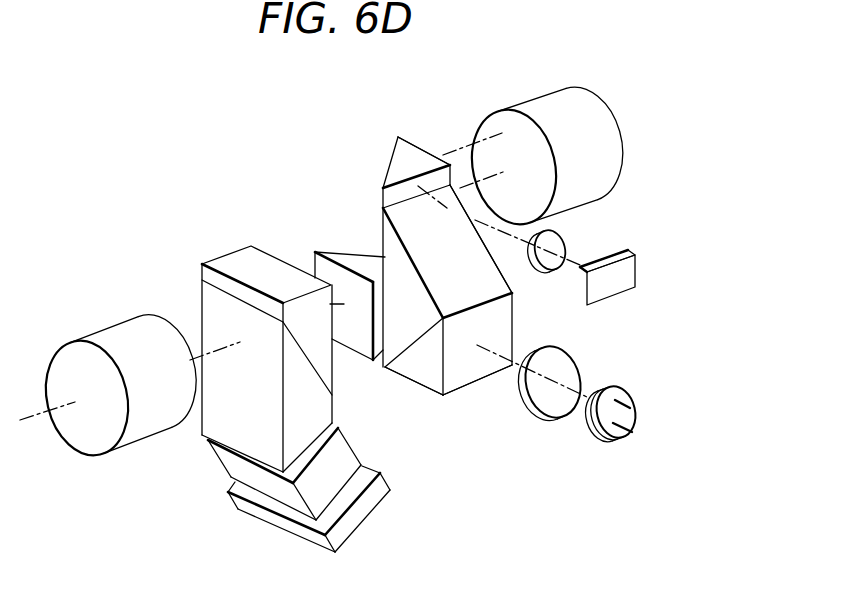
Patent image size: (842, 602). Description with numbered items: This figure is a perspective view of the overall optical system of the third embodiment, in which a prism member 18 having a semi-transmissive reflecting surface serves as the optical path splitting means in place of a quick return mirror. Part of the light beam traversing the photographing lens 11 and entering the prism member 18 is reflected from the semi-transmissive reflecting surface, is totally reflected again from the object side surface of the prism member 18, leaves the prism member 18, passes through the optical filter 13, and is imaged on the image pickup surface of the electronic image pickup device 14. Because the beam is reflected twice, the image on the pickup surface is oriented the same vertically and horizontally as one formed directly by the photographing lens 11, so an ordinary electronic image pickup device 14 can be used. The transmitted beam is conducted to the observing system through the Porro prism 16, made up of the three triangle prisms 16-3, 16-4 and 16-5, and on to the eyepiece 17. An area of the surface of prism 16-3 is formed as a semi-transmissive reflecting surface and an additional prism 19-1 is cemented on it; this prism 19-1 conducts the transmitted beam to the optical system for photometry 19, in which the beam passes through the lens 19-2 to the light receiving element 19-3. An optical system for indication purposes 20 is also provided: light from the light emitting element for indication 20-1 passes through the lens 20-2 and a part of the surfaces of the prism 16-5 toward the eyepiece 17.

The photographing lens 11 is at (148, 333).
The optical filter 13 is at (225, 448).
The electronic image pickup device 14 is at (250, 503).
The Porro prism 16 is at (386, 150).
The triangle prism 16-3 is at (478, 258).
The triangle prism 16-4 is at (340, 250).
The triangle prism 16-5 is at (417, 155).
The eyepiece 17 is at (577, 100).
The prism member 18 is at (237, 250).
The optical system for photometry 19 is at (512, 438).
The additional prism 19-1 is at (433, 383).
The lens 19-2 is at (540, 405).
The light receiving element 19-3 is at (602, 438).
The optical system for indication purposes 20 is at (632, 245).
The light emitting element for indication 20-1 is at (630, 277).
The lens 20-2 is at (560, 243).